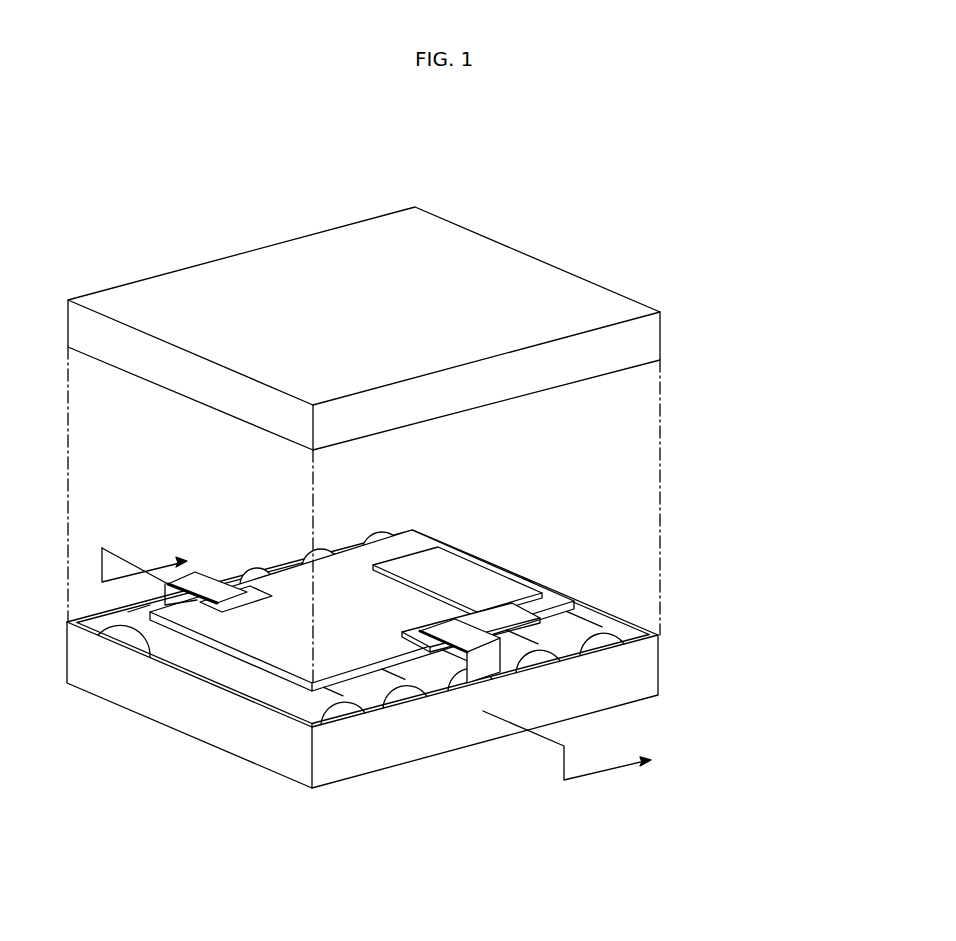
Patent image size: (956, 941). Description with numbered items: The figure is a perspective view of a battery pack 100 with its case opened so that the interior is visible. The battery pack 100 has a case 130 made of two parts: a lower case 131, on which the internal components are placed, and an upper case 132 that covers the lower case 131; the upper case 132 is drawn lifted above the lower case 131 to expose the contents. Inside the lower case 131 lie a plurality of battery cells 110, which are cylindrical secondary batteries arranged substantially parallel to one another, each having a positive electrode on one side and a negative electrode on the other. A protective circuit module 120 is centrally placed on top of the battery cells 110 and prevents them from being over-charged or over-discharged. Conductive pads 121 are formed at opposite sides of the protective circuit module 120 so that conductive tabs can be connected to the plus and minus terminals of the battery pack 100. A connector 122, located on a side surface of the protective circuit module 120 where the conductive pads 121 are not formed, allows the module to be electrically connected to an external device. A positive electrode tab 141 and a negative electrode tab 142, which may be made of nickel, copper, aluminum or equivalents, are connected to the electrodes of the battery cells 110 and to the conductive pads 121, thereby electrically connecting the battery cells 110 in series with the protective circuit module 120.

The battery pack 100 is at (73, 185).
The battery cells 110 is at (219, 666).
The protective circuit module 120 is at (360, 563).
The conductive pads 121 is at (482, 630).
The connector 122 is at (460, 572).
The case 130 is at (765, 432).
The lower case 131 is at (657, 663).
The upper case 132 is at (653, 336).
The positive electrode tab 141 is at (215, 588).
The negative electrode tab 142 is at (451, 637).